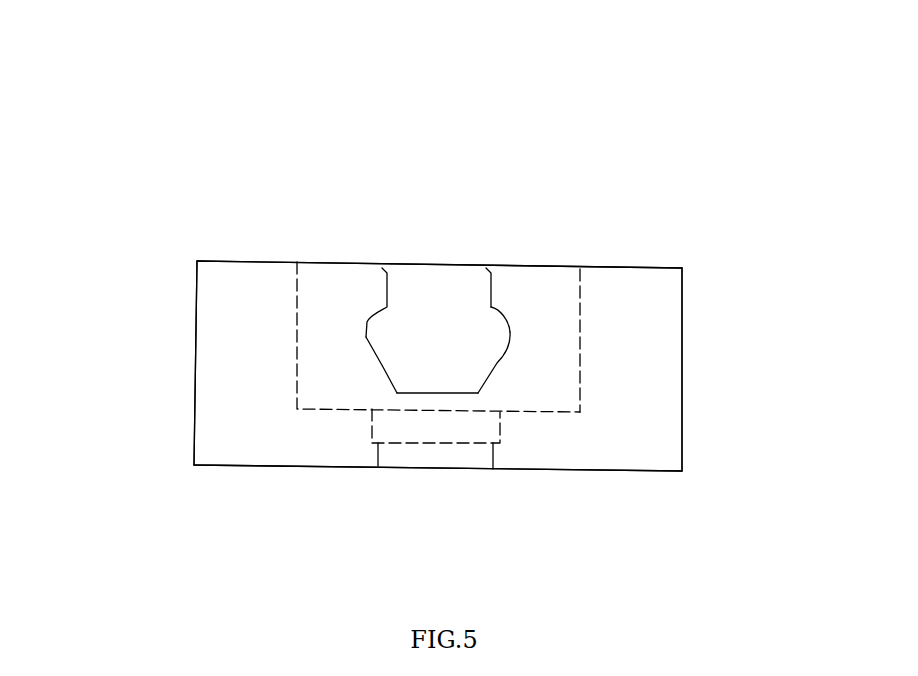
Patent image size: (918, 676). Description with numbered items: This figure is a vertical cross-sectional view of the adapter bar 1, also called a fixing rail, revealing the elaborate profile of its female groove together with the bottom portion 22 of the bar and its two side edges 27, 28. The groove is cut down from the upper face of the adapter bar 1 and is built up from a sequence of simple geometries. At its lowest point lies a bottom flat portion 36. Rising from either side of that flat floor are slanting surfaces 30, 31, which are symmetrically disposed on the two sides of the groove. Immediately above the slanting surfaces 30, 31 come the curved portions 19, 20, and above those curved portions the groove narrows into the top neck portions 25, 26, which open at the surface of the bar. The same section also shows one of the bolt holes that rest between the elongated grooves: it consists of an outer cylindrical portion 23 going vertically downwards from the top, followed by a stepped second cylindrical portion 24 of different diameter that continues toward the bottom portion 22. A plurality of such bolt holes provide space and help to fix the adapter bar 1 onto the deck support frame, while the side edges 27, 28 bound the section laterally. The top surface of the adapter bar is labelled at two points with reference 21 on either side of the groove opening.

The adapter bar 1 is at (724, 250).
The curved portion 19 is at (369, 313).
The curved portion 20 is at (494, 323).
The top wall 21 is at (263, 259).
The bottom portion 22 is at (224, 468).
The outer cylindrical portion 23 is at (574, 311).
The stepped second cylindrical portion 24 is at (385, 458).
The top neck portion 25 is at (494, 288).
The top neck portion 26 is at (381, 288).
The side edge 27 is at (684, 455).
The side edge 28 is at (193, 380).
The slanting surface 30 is at (500, 358).
The slanting surface 31 is at (380, 366).
The bottom flat portion 36 is at (445, 386).